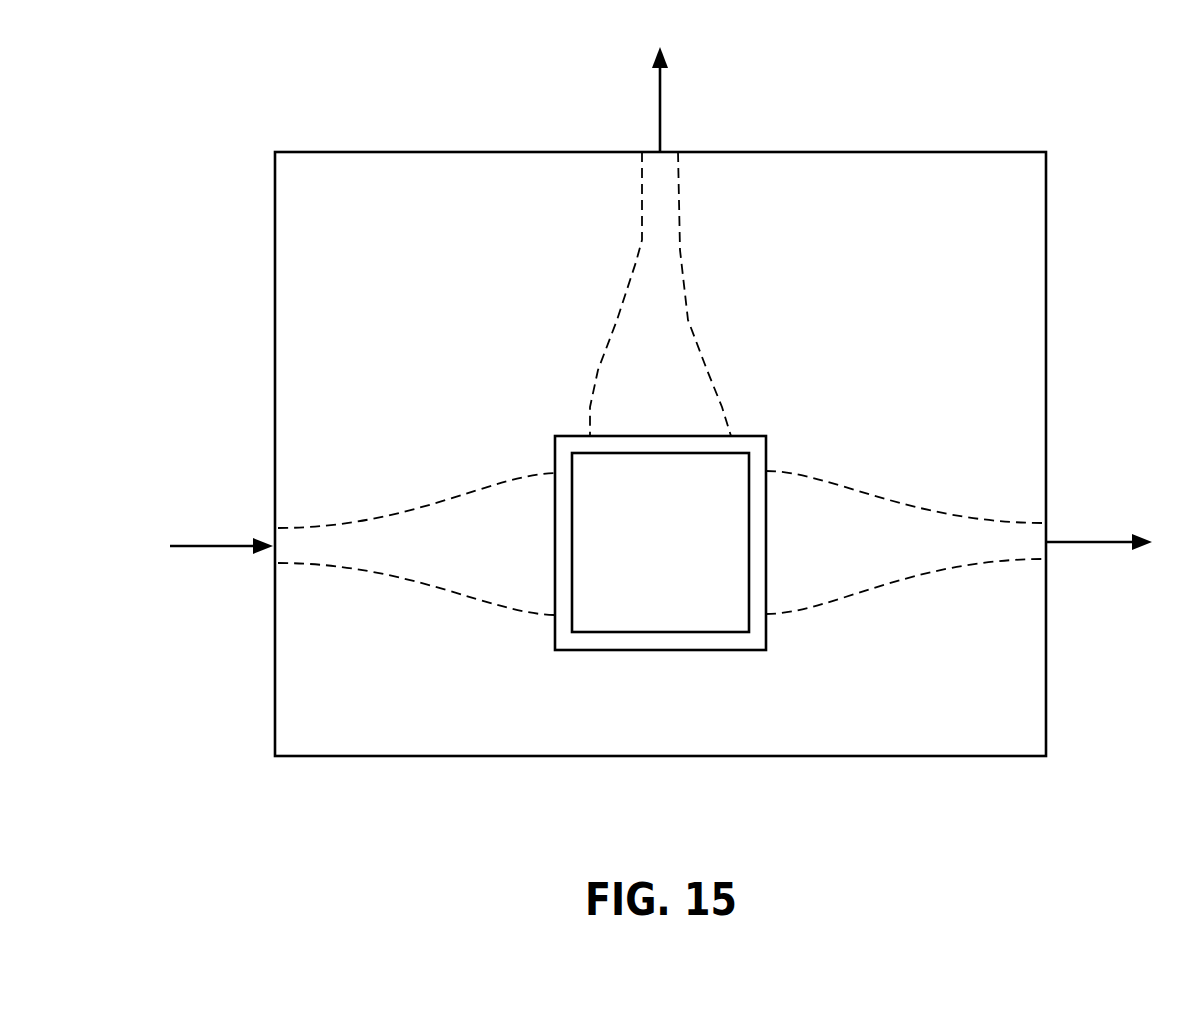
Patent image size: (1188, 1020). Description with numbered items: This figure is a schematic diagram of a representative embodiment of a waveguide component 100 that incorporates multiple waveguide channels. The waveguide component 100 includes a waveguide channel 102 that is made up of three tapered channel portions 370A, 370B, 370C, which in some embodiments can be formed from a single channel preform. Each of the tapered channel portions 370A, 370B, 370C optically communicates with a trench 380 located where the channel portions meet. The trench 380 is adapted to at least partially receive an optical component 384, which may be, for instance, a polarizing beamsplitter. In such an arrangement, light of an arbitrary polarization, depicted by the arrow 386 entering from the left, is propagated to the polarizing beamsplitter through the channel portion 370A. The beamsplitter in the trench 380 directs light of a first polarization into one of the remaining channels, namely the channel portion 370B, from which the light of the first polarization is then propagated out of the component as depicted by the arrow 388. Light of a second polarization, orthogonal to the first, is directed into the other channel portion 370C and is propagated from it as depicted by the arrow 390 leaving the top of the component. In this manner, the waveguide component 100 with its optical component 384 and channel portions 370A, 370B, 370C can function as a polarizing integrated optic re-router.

The waveguide component 100 is at (223, 152).
The waveguide channel 102 is at (433, 295).
The tapered channel portion 370A is at (485, 527).
The tapered channel portion 370B is at (845, 523).
The tapered channel portion 370C is at (658, 263).
The trench 380 is at (563, 443).
The optical component 384 is at (678, 615).
The arrow 386 is at (240, 543).
The arrow 388 is at (1080, 540).
The arrow 390 is at (660, 98).